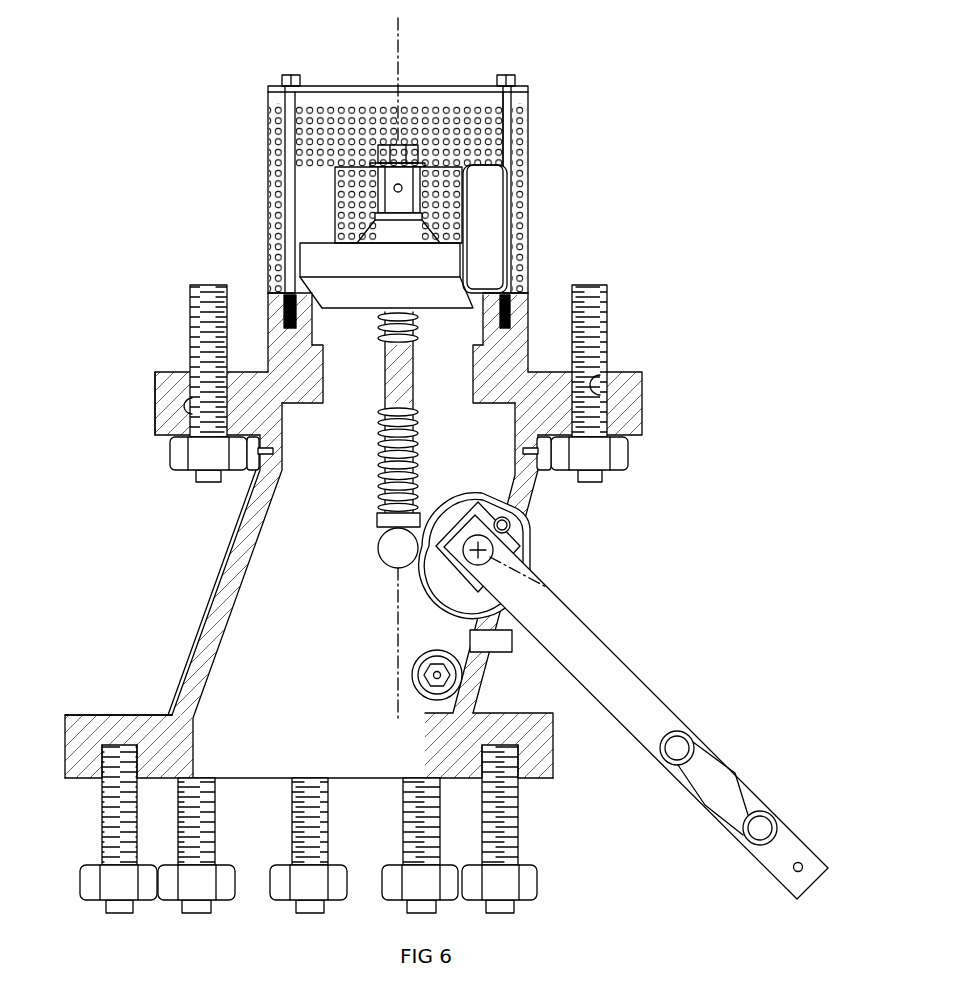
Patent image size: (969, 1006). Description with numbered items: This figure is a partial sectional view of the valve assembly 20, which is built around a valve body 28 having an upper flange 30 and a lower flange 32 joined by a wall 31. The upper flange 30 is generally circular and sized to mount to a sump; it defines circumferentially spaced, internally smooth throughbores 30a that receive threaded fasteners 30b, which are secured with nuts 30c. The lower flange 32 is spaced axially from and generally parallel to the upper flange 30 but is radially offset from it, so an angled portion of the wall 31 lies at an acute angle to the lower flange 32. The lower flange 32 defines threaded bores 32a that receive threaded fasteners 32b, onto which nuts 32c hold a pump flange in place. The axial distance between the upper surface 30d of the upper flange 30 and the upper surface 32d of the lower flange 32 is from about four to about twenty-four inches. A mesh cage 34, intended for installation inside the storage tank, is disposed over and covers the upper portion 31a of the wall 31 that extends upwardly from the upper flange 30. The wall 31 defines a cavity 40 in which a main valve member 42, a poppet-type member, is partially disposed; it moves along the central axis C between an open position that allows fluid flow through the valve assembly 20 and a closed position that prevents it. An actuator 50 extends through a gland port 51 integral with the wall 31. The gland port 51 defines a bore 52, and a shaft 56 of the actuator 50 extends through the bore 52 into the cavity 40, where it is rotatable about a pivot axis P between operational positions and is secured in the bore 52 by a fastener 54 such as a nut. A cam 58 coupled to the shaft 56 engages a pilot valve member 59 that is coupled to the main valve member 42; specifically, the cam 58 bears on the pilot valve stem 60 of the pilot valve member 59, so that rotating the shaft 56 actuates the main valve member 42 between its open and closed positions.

The valve assembly 20 is at (553, 136).
The valve body 28 is at (152, 405).
The upper flange 30 is at (636, 397).
The throughbores 30a is at (192, 410).
The threaded fasteners 30b is at (190, 342).
The nuts 30c is at (175, 462).
The upper surface 30d is at (175, 455).
The wall 31 is at (213, 628).
The upper portion 31a is at (518, 328).
The lower flange 32 is at (148, 735).
The threaded bores 32a is at (108, 760).
The threaded fasteners 32b is at (112, 835).
The nuts 32c is at (150, 892).
The upper surface 32d is at (100, 712).
The mesh cage 34 is at (522, 155).
The cavity 40 is at (500, 405).
The main valve member 42 is at (447, 262).
The actuator 50 is at (536, 574).
The gland port 51 is at (525, 500).
The bore 52 is at (457, 590).
The fastener 54 is at (523, 545).
The shaft 56 is at (462, 522).
The cam 58 is at (385, 560).
The pilot valve member 59 is at (380, 452).
The pilot valve stem 60 is at (380, 523).
The central axis C is at (372, 57).
The pivot axis P is at (553, 585).